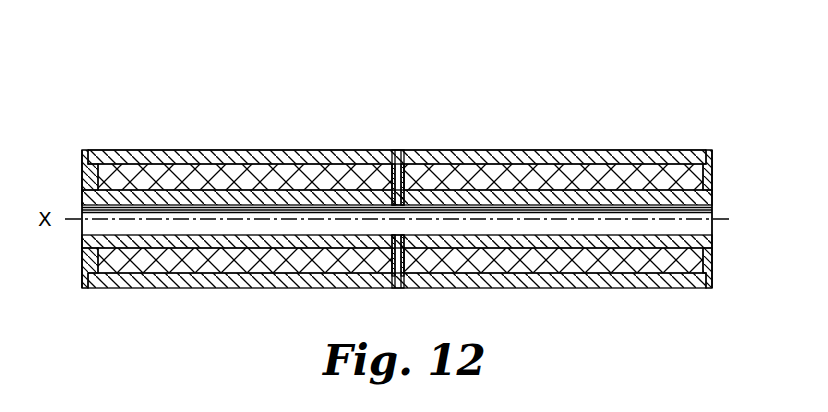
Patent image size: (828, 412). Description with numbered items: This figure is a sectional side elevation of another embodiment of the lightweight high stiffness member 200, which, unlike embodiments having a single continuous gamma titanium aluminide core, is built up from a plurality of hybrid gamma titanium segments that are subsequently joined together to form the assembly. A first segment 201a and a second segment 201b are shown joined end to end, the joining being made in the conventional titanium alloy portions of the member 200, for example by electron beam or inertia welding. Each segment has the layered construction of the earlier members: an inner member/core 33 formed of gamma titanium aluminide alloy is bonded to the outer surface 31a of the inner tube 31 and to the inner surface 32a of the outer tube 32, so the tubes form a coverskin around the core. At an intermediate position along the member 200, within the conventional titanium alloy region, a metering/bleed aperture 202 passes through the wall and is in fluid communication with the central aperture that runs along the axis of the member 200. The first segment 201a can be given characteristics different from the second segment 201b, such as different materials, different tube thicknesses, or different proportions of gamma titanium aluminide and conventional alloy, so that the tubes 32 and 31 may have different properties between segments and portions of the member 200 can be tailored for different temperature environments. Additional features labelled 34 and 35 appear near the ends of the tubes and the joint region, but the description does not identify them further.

The lightweight high stiffness member 200 is at (637, 118).
The outer tube 32 is at (117, 150).
The inner surface of outer tube 32a is at (290, 150).
The first segment 201a is at (208, 150).
The second segment 201b is at (476, 150).
The metering/bleed aperture 202 is at (398, 150).
The inner member/core 33 is at (82, 162).
The outer surface of tube 31a is at (86, 189).
The adhesive layer 35 is at (704, 191).
The tube 31 is at (85, 248).
The lower edge member 34 is at (84, 280).